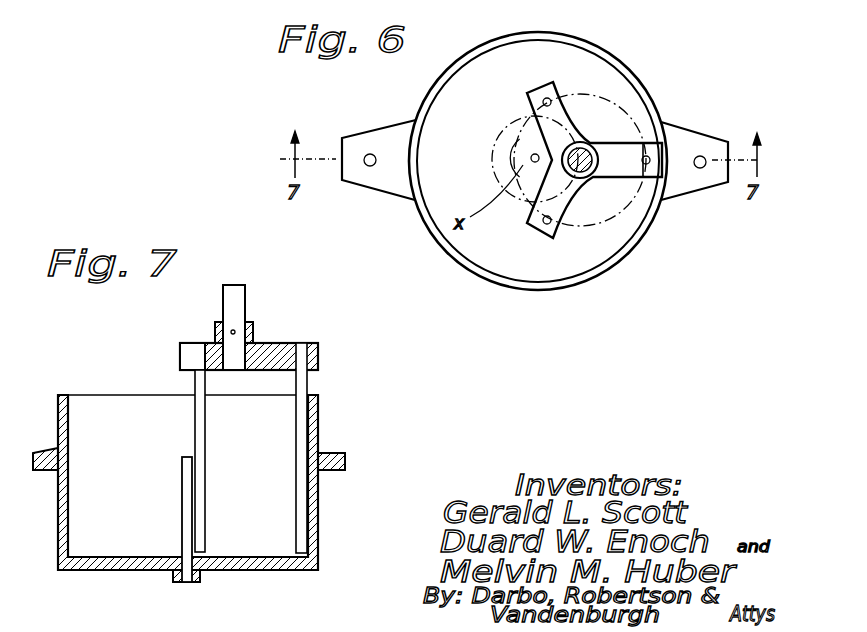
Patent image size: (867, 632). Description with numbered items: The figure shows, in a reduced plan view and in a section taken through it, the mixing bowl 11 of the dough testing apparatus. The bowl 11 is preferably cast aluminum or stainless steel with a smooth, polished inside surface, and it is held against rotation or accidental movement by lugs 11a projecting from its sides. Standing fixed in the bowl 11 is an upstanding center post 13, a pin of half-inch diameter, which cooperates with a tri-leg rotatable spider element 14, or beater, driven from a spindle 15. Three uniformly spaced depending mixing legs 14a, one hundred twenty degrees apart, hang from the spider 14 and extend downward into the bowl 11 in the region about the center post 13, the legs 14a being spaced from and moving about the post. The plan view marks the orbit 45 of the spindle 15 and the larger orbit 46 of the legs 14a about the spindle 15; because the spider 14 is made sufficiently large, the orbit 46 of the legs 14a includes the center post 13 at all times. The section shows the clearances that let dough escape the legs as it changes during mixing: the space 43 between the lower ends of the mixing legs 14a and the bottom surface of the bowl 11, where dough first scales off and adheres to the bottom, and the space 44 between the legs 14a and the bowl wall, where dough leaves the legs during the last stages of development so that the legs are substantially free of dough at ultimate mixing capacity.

In FIG. 6, the mixing bowl 11 is at (483, 274).
In FIG. 7, the mixing bowl 11 is at (58, 395).
In FIG. 6, the lugs 11a is at (378, 138).
In FIG. 7, the lugs 11a is at (340, 453).
In FIG. 6, the center post 13 is at (535, 154).
In FIG. 7, the center post 13 is at (182, 465).
In FIG. 6, the spider element 14 is at (574, 204).
In FIG. 7, the spider element 14 is at (276, 343).
In FIG. 6, the mixing legs 14a is at (548, 97).
In FIG. 7, the mixing legs 14a is at (296, 422).
In FIG. 6, the spindle 15 is at (586, 146).
In FIG. 7, the spindle 15 is at (238, 300).
In FIG. 7, the space 43 is at (295, 553).
In FIG. 7, the space 44 is at (310, 395).
In FIG. 6, the orbit 45 is at (495, 173).
In FIG. 6, the orbit 46 is at (512, 140).